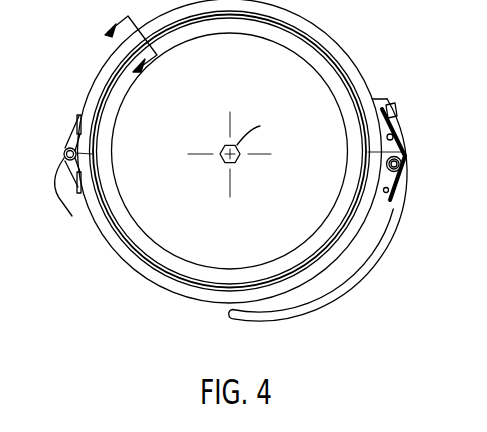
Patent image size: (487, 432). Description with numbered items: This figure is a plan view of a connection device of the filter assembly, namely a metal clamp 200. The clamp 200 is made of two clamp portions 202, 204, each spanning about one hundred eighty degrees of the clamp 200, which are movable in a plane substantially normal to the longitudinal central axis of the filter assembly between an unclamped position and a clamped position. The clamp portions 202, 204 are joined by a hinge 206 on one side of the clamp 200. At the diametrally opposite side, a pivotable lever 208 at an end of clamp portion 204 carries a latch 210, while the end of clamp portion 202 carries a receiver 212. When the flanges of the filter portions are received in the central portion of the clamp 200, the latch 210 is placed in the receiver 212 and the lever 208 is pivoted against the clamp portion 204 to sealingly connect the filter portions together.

The clamp 200 is at (271, 174).
The clamp portion 202 is at (303, 25).
The clamp portion 204 is at (183, 292).
The hinge 206 is at (72, 216).
The pivotable lever 208 is at (373, 239).
The latch 210 is at (403, 152).
The receiver 212 is at (423, 144).